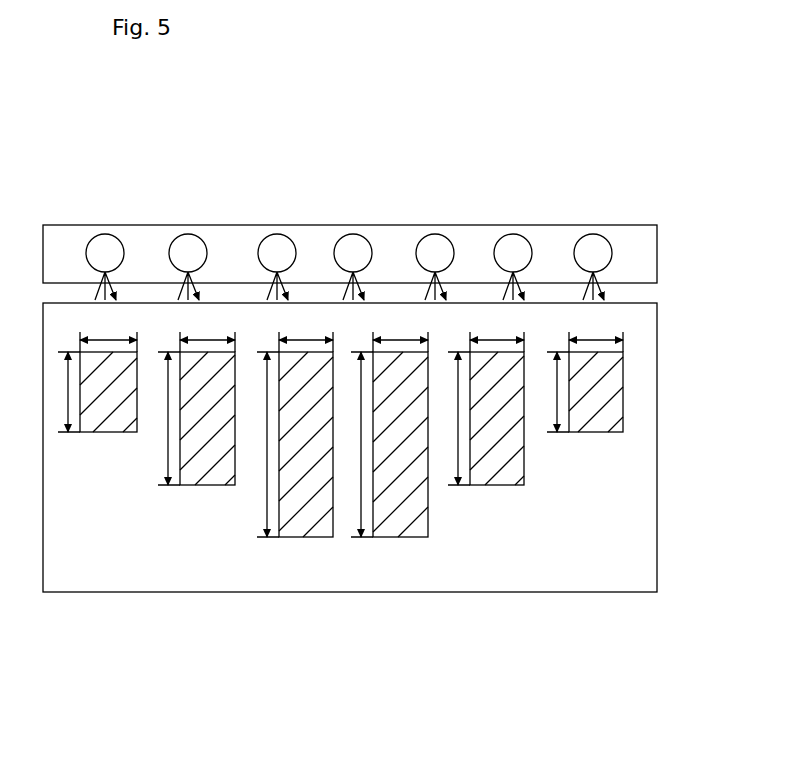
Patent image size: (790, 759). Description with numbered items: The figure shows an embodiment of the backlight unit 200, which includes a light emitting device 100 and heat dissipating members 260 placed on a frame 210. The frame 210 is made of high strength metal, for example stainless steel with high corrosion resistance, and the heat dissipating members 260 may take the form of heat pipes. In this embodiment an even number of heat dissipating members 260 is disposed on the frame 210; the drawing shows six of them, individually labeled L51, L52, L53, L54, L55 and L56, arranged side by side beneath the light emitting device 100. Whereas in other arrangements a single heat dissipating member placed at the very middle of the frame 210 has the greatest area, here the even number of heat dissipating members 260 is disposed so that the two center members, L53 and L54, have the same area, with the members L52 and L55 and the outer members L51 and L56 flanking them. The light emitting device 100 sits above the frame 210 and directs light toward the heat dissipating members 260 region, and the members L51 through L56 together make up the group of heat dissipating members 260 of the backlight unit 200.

The light emitting device 100 is at (352, 262).
The backlight unit 200 is at (456, 200).
The frame 210 is at (618, 502).
The heat dissipating members 260 is at (334, 528).
The first pattern L51 is at (107, 432).
The second pattern L52 is at (205, 485).
The third pattern L53 is at (305, 537).
The fourth pattern L54 is at (400, 537).
The fifth pattern L55 is at (497, 485).
The sixth pattern L56 is at (578, 497).